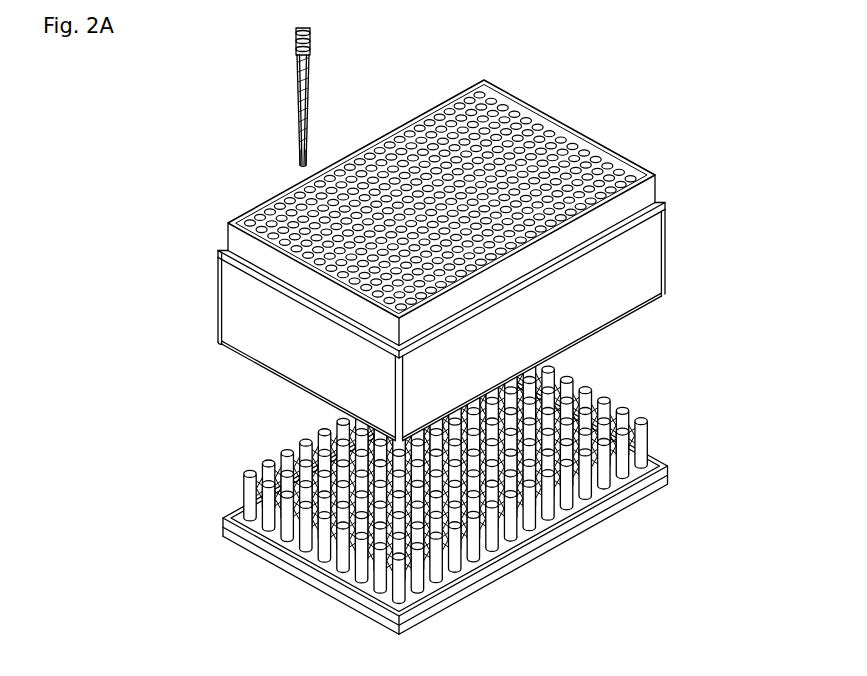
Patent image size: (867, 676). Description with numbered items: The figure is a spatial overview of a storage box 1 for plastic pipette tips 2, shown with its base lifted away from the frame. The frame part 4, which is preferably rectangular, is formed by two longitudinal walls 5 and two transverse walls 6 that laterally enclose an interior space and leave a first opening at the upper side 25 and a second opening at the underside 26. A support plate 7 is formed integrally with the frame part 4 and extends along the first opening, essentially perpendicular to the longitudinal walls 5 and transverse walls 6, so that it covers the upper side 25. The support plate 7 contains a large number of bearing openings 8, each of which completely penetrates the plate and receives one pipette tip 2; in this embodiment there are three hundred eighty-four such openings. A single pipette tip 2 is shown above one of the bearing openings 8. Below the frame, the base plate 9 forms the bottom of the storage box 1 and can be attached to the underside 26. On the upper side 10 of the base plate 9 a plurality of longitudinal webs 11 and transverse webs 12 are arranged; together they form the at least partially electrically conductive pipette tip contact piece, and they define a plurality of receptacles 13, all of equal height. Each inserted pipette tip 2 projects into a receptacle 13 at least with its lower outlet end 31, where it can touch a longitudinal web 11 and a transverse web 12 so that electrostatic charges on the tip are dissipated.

The storage box 1 is at (777, 71).
The pipette tip 2 is at (296, 74).
The outlet end 31 is at (297, 165).
The frame part 4 is at (679, 220).
The longitudinal wall 5 is at (633, 258).
The transverse wall 6 is at (243, 305).
The support plate 7 is at (574, 131).
The bearing opening 8 is at (286, 195).
The base plate 9 is at (678, 482).
The upper side of the base plate 10 is at (646, 458).
The longitudinal web 11 is at (285, 525).
The transverse web 12 is at (532, 525).
The receptacle 13 is at (267, 466).
The upper side 25 is at (192, 218).
The underside 26 is at (188, 357).